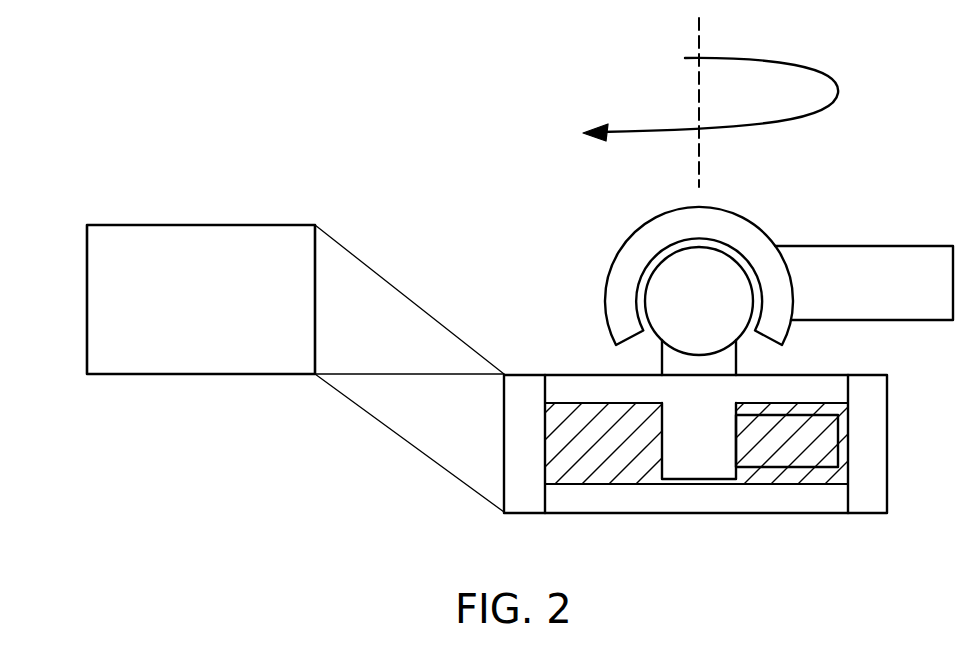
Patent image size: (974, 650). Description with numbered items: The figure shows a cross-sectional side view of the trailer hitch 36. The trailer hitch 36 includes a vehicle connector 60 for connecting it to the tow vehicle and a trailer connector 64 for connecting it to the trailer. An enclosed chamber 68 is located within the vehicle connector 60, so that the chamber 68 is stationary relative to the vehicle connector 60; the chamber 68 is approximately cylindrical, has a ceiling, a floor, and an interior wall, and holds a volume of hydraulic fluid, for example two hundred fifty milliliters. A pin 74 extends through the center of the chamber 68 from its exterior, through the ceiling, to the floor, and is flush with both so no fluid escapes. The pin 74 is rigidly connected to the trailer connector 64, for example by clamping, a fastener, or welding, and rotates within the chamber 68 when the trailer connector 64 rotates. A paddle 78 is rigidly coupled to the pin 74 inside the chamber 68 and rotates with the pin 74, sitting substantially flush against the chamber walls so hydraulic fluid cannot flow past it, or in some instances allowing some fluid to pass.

The trailer hitch 36 is at (327, 122).
The vehicle connector 60 is at (199, 366).
The trailer connector 64 is at (867, 258).
The chamber 68 is at (600, 499).
The pin 74 is at (697, 462).
The paddle 78 is at (792, 462).